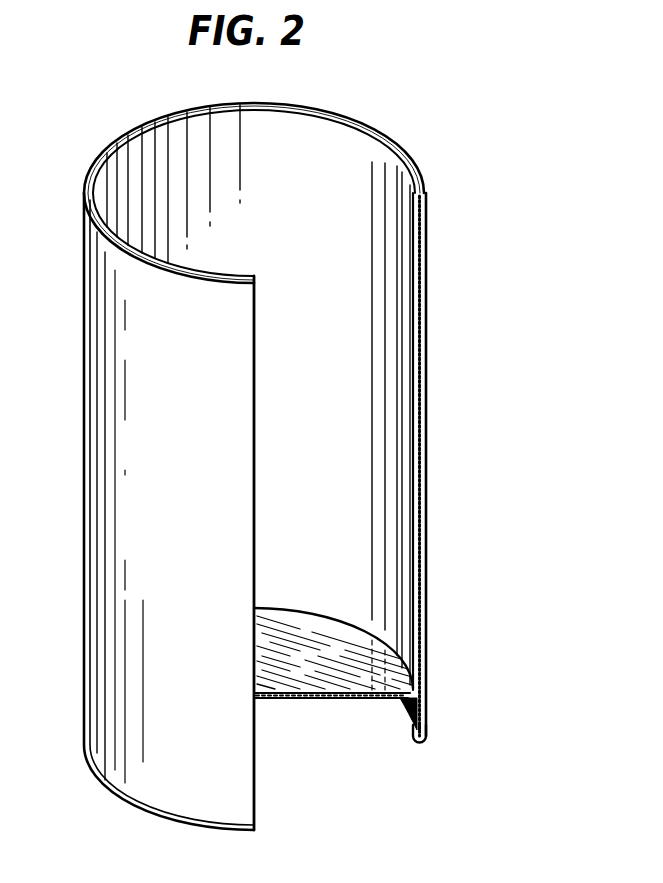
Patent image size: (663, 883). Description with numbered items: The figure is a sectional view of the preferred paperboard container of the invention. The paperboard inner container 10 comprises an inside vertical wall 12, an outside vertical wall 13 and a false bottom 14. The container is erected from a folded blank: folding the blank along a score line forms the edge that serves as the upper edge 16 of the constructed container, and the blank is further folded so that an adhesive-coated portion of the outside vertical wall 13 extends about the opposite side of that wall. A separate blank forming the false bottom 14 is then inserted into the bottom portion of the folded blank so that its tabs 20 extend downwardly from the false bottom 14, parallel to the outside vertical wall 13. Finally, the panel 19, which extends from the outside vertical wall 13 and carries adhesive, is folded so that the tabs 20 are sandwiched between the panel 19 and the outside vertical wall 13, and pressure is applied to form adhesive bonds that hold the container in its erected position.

The paperboard inner container 10 is at (86, 518).
The inside vertical wall 12 is at (417, 452).
The outside vertical wall 13 is at (425, 484).
The false bottom 14 is at (308, 702).
The upper edge 16 is at (402, 119).
The panel 19 is at (407, 720).
The tabs 20 is at (427, 727).